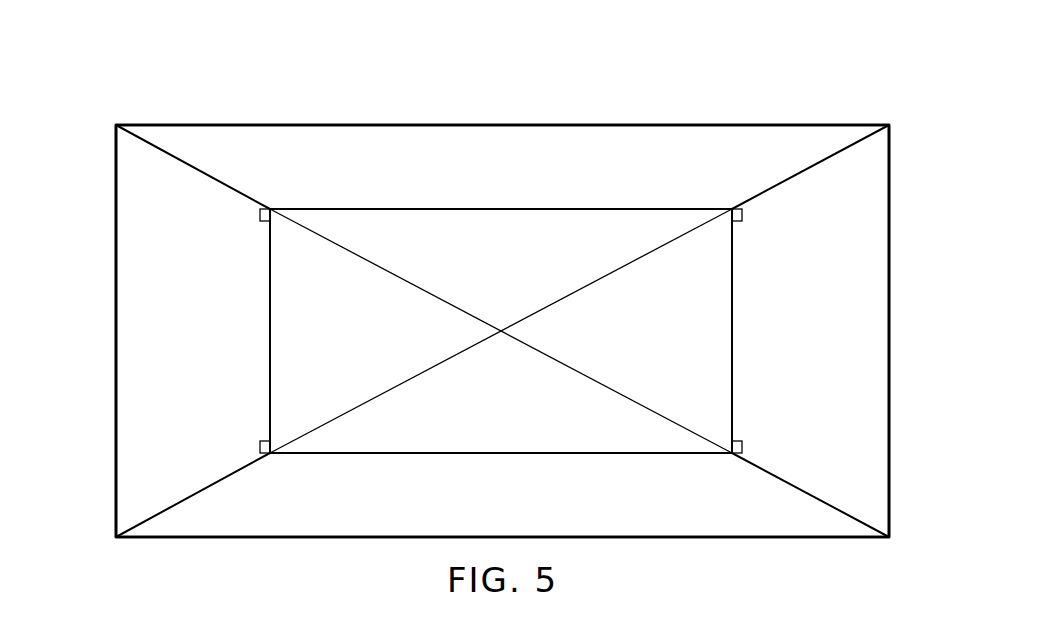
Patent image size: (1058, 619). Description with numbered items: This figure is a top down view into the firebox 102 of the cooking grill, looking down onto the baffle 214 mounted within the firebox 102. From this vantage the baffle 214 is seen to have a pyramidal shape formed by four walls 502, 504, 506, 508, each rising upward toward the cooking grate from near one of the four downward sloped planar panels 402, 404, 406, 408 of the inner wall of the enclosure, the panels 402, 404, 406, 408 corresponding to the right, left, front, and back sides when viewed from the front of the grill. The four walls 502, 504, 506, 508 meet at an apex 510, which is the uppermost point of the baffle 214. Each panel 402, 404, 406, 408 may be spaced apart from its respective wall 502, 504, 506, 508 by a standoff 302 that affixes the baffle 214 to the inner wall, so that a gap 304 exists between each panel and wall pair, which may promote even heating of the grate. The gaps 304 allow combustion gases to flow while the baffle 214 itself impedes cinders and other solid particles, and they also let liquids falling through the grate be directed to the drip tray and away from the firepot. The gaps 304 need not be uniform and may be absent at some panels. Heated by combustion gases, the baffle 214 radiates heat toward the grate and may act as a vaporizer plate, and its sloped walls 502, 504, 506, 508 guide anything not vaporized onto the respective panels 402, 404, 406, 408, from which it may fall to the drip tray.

The firebox 102 is at (304, 82).
The baffle 214 is at (364, 216).
The standoff 302 is at (260, 216).
The gap 304 is at (596, 200).
The panel 402 is at (881, 330).
The panel 404 is at (124, 330).
The panel 406 is at (325, 528).
The panel 408 is at (500, 135).
The wall 502 is at (724, 330).
The wall 504 is at (280, 330).
The wall 506 is at (500, 447).
The wall 508 is at (500, 218).
The apex 510 is at (499, 326).